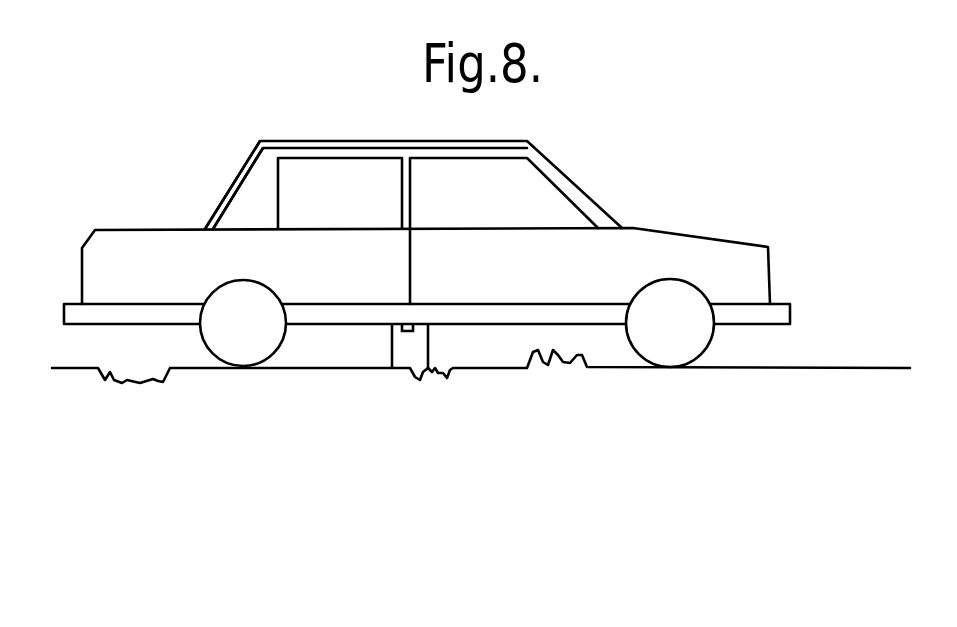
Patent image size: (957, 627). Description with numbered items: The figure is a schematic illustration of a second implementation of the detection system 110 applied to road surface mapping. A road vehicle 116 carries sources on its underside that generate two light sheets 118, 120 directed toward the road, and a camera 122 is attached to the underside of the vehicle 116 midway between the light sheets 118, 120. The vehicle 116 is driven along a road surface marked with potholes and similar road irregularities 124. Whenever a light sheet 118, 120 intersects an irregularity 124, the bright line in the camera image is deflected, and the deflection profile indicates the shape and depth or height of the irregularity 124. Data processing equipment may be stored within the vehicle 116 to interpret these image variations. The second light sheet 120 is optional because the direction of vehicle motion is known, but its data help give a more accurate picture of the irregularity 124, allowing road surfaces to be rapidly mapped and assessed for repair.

The detection system 110 is at (193, 146).
The road vehicle 116 is at (227, 199).
The light sheet 118 is at (392, 344).
The second light sheet 120 is at (428, 348).
The camera 122 is at (408, 333).
The road irregularities 124 is at (120, 385).